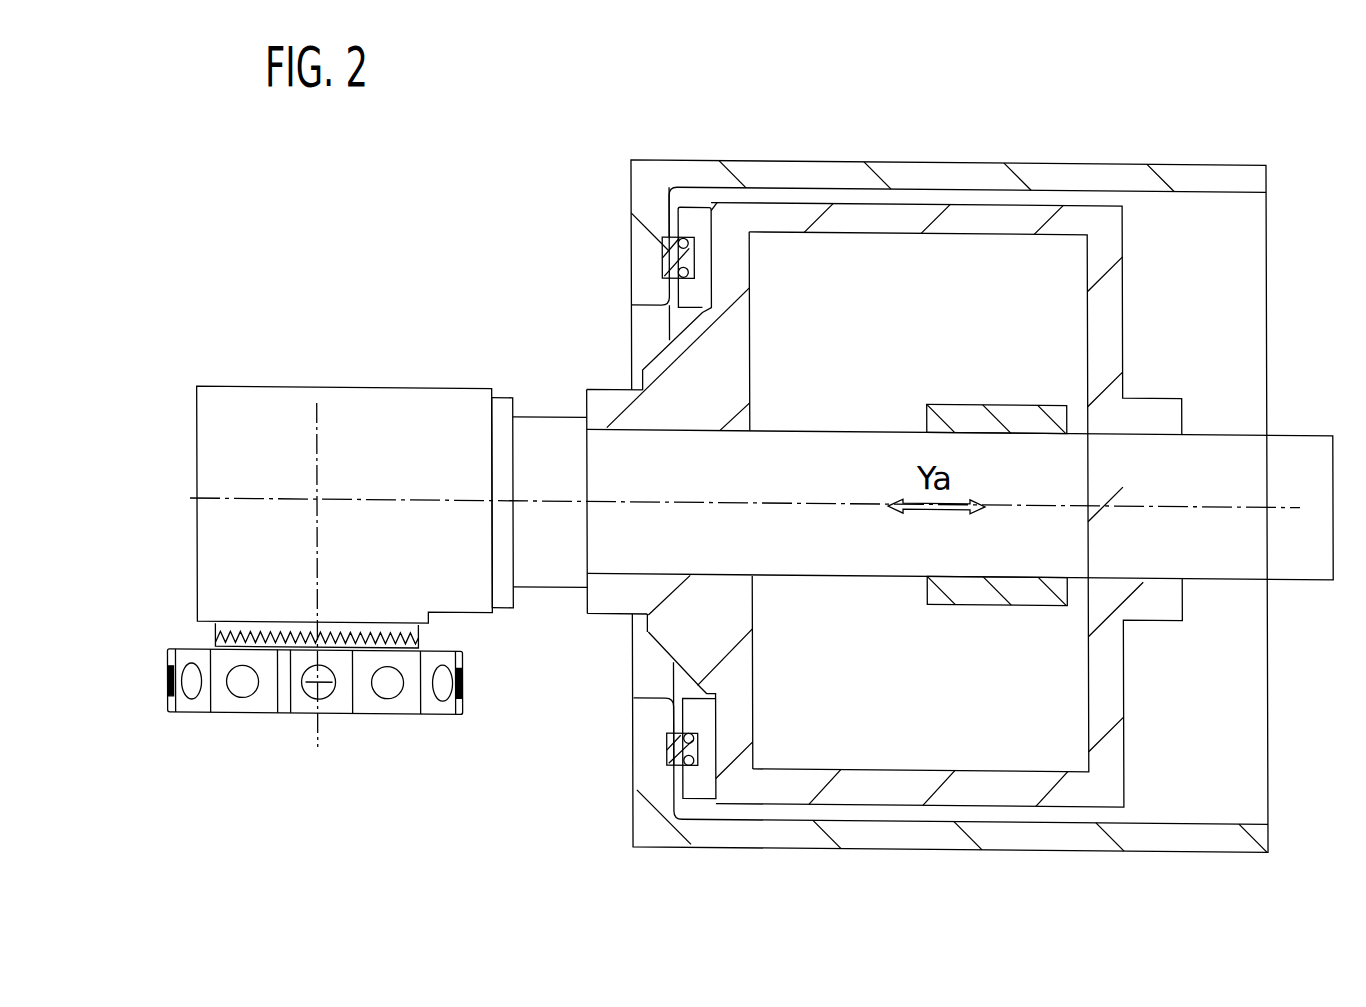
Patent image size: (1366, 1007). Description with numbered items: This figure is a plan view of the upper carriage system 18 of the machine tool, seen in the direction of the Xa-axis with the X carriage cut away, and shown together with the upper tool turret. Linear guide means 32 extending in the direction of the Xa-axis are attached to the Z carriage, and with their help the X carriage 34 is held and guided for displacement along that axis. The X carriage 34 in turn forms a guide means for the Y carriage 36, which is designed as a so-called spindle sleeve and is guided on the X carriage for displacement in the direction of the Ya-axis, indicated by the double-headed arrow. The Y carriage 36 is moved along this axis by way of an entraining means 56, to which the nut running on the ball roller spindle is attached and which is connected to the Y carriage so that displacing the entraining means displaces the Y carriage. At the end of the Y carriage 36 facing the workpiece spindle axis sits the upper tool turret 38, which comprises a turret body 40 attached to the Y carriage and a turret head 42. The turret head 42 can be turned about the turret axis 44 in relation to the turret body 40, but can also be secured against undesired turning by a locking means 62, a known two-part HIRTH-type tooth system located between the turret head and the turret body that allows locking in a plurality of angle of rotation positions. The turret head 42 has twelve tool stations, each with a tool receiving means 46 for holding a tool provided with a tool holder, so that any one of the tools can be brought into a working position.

The upper carriage system 18 is at (1203, 152).
The linear guide means 32 is at (665, 253).
The X carriage 34 is at (784, 199).
The Y carriage 36 is at (660, 449).
The upper tool turret 38 is at (276, 661).
The turret body 40 is at (348, 404).
The turret head 42 is at (398, 709).
The turret axis 44 is at (318, 726).
The tool receiving means 46 is at (238, 692).
The entraining means 56 is at (1005, 410).
The locking means 62 is at (285, 648).